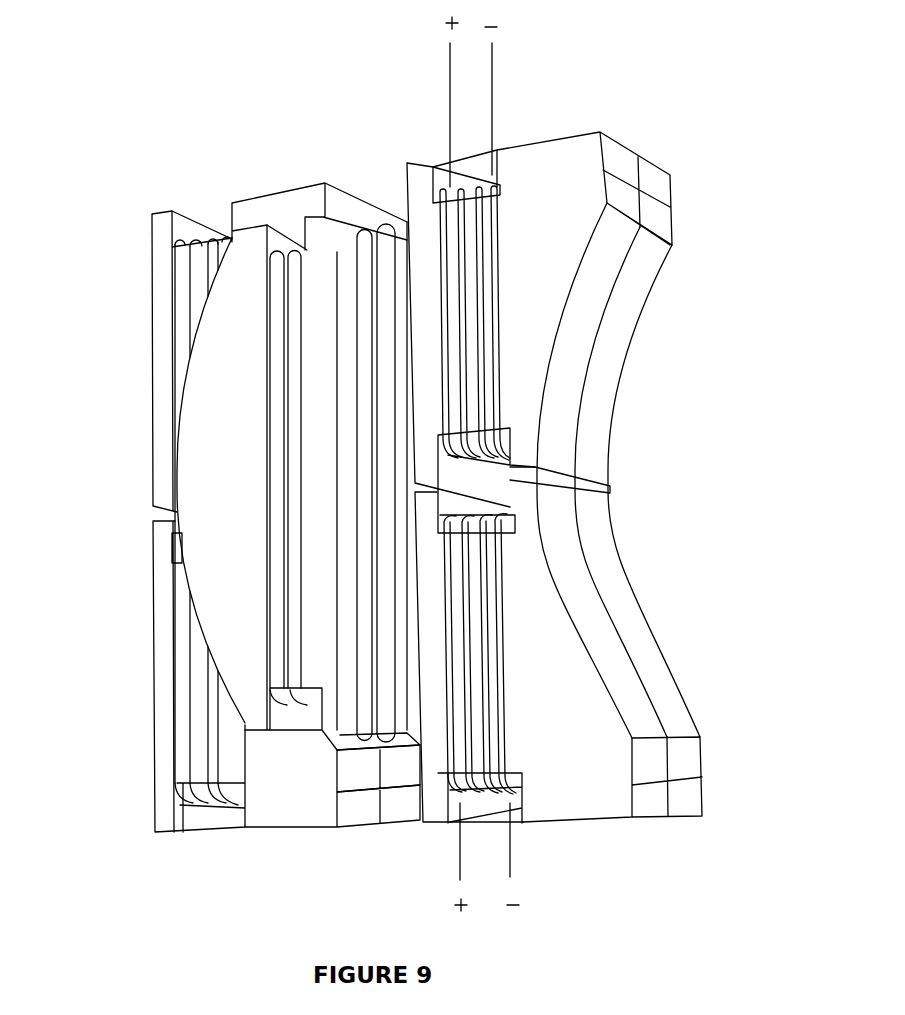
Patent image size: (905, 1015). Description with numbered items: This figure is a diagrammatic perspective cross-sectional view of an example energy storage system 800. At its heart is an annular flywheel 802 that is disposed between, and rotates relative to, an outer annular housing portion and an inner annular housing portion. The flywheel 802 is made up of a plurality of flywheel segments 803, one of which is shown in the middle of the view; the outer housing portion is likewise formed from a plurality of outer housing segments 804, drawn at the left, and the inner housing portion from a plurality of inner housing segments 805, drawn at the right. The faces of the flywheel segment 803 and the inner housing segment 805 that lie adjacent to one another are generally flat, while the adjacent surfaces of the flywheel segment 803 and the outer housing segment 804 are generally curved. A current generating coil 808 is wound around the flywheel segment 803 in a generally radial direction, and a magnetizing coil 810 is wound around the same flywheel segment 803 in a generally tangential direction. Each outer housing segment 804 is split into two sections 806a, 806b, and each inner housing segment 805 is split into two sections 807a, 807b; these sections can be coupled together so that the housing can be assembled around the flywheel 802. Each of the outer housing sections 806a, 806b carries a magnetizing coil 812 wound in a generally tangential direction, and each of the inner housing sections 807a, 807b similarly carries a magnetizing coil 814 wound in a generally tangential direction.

The energy storage system 800 is at (626, 470).
The annular flywheel 802 is at (326, 512).
The flywheel segment 803 is at (202, 500).
The outer housing segment 804 is at (133, 526).
The inner housing segment 805 is at (636, 665).
The housing section 806a is at (160, 236).
The housing section 806b is at (170, 817).
The housing section 807a is at (567, 160).
The housing section 807b is at (618, 800).
The current generating coil 808 is at (378, 232).
The magnetizing coil 810 is at (302, 687).
The magnetizing coil 812 is at (198, 238).
The magnetizing coil 814 is at (441, 192).